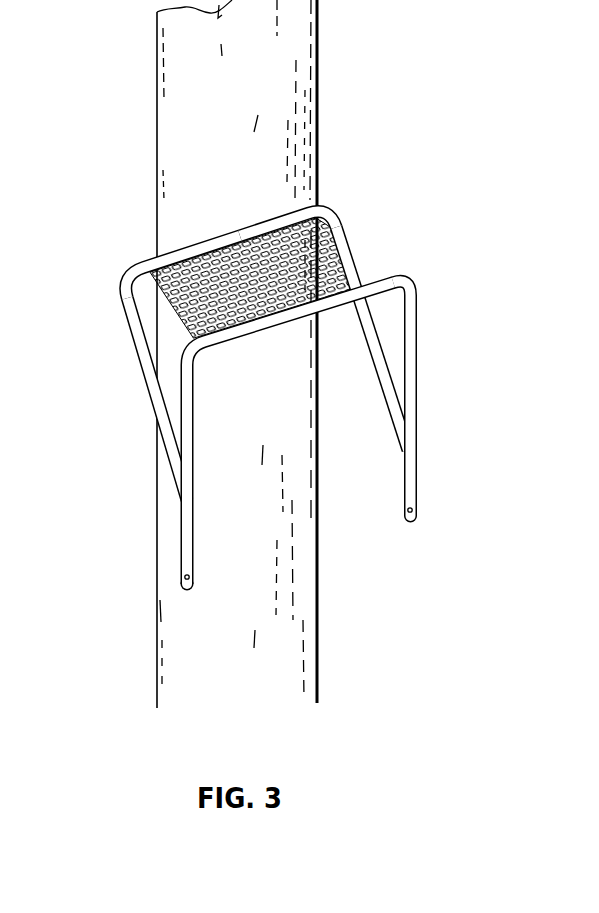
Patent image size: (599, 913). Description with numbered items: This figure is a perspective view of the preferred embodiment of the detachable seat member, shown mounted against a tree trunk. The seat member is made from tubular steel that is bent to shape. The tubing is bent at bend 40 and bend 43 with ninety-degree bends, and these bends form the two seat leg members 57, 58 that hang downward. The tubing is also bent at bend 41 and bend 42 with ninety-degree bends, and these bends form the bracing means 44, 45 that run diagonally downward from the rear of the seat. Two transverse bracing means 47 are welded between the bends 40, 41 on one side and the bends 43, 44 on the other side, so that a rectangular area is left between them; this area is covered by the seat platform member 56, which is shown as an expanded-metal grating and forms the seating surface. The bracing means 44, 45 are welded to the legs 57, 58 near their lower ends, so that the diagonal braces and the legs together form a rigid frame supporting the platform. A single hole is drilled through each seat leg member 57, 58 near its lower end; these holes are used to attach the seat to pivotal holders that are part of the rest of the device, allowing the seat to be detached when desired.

The bend 40 is at (210, 368).
The bend 41 is at (106, 276).
The bend 42 is at (336, 200).
The bend 43 is at (426, 270).
The bracing means 44 is at (370, 388).
The bracing means 45 is at (128, 388).
The transverse bracing means 47 is at (173, 319).
The seat platform member 56 is at (227, 280).
The seat leg member 57 is at (440, 496).
The seat leg member 58 is at (206, 547).